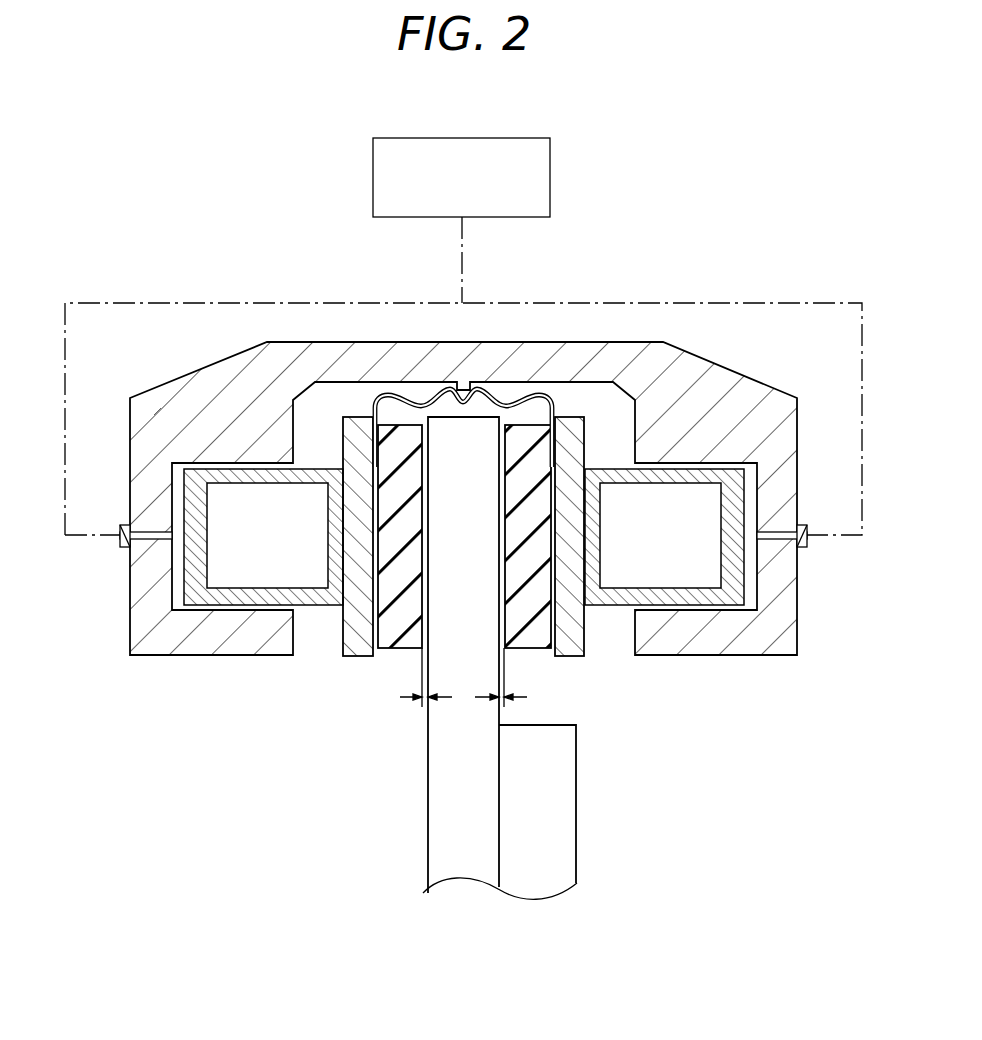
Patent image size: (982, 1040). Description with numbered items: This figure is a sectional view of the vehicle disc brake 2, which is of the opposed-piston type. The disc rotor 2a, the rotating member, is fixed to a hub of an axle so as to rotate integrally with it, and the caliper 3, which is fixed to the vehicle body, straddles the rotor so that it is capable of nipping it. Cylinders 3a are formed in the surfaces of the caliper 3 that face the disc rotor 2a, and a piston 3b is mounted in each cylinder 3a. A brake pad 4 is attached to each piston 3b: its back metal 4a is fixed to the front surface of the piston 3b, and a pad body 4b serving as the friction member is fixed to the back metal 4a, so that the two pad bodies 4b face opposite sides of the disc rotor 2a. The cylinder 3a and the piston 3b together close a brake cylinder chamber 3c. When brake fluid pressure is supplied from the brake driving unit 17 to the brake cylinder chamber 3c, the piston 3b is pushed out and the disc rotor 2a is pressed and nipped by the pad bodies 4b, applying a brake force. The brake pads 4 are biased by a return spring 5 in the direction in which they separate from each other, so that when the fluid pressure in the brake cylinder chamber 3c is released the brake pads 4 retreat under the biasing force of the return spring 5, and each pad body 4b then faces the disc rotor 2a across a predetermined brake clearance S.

The disc brake 2 is at (541, 604).
The disc rotor 2a is at (447, 827).
The caliper 3 is at (457, 514).
The cylinder 3a is at (238, 448).
The piston 3b is at (310, 597).
The brake cylinder chamber 3c is at (178, 500).
The brake pad 4 is at (477, 591).
The back metal 4a is at (360, 650).
The pad body 4b is at (400, 645).
The return spring 5 is at (553, 396).
The brake clearance S is at (423, 705).
The brake driving unit 17 is at (552, 173).